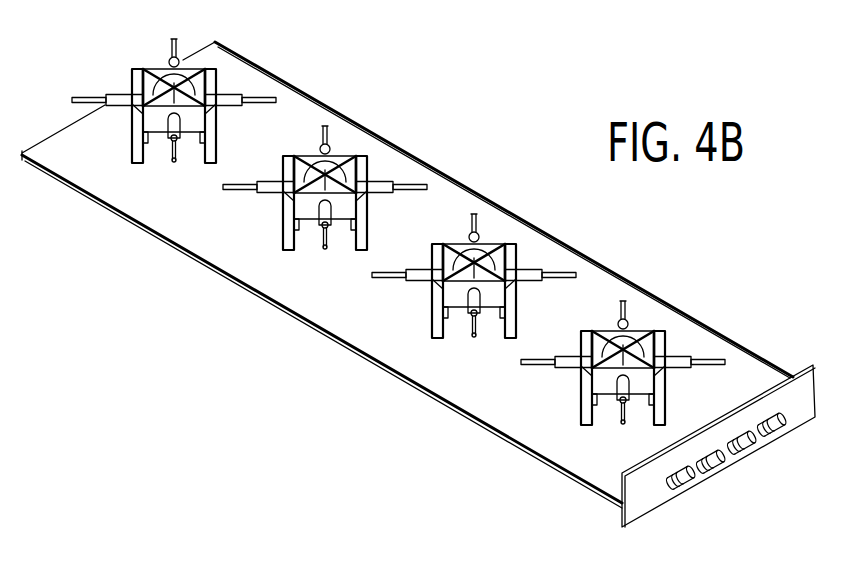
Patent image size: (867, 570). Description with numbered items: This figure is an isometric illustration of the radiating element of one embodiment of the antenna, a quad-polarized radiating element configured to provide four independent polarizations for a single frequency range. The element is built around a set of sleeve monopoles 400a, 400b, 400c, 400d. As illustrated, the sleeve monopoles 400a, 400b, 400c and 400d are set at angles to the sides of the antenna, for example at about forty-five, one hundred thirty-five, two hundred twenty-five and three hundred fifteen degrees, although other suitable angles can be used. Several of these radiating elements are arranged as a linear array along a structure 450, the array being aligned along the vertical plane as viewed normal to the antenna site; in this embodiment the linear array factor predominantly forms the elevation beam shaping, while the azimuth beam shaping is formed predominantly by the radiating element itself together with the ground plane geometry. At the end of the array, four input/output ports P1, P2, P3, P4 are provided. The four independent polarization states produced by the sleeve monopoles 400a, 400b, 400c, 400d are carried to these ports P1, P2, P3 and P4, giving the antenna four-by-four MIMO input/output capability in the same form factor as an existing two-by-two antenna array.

The sleeve monopole 400a is at (186, 52).
The sleeve monopole 400b is at (58, 99).
The sleeve monopole 400c is at (252, 86).
The sleeve monopole 400d is at (183, 173).
The mounting platform / substrate 450 is at (272, 283).
The input/output port P1 is at (690, 488).
The input/output port P2 is at (719, 472).
The input/output port P3 is at (751, 453).
The input/output port P4 is at (780, 437).